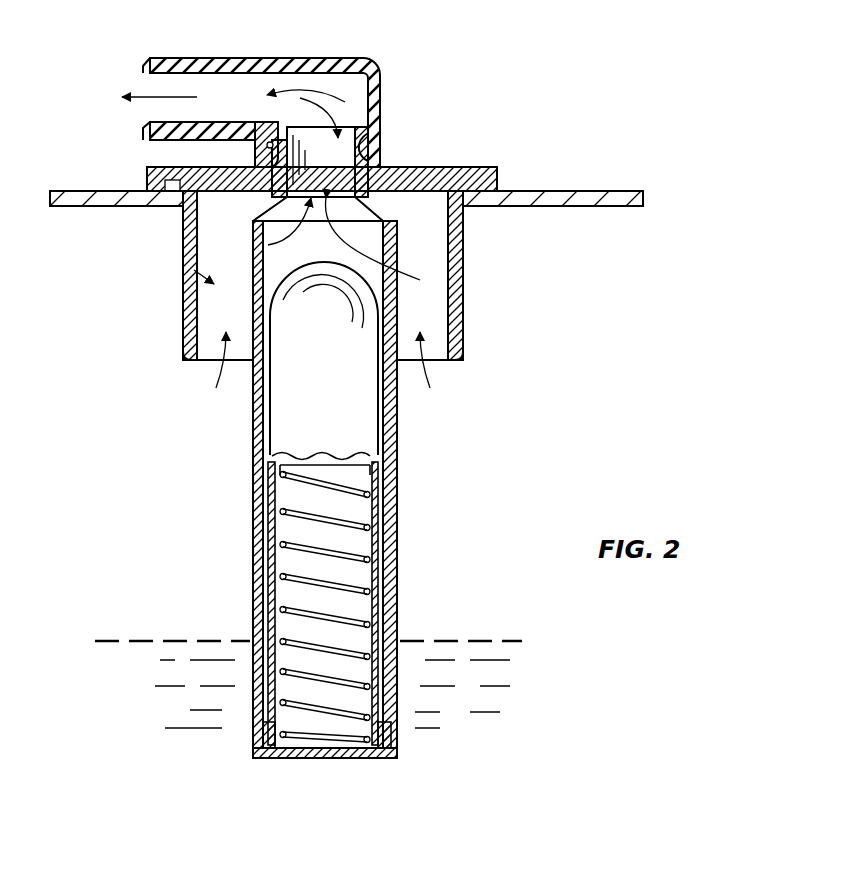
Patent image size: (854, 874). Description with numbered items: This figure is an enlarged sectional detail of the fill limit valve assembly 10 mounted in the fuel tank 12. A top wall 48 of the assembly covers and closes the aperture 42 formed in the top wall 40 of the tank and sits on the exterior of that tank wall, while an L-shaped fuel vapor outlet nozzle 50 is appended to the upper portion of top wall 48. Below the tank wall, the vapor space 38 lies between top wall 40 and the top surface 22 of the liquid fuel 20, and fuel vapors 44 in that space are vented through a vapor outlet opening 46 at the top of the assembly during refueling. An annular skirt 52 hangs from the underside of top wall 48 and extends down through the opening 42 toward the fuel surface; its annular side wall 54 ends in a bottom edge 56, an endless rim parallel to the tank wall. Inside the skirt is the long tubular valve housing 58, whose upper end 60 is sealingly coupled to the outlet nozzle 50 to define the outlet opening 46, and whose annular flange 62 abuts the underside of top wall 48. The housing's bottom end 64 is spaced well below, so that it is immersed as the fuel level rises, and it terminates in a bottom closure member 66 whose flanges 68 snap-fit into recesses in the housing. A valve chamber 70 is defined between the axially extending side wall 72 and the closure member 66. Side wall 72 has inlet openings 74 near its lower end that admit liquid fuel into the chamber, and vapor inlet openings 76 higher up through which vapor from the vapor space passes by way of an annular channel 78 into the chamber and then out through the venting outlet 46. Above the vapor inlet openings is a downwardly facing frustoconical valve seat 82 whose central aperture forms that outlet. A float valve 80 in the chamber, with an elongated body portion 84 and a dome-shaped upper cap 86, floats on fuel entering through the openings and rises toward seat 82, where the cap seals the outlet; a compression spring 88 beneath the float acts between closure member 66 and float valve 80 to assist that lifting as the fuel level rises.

The fill limit valve assembly 10 is at (430, 163).
The fuel tank 12 is at (632, 250).
The liquid fuel 20 is at (490, 664).
The top surface of liquid fuel 22 is at (150, 638).
The vapor space 38 is at (88, 228).
The top wall of fuel tank 40 is at (578, 190).
The aperture (tank opening) 42 is at (463, 226).
The fuel vapors 44 is at (128, 92).
The vapor outlet opening 46 is at (352, 130).
The top wall 48 is at (442, 164).
The L-shaped fuel vapor outlet nozzle 50 is at (311, 56).
The annular skirt 52 is at (181, 303).
The annular side wall 54 is at (456, 337).
The bottom edge 56 is at (198, 362).
The valve housing 58 is at (412, 530).
The upper end of valve housing 60 is at (376, 159).
The annular flange 62 is at (452, 168).
The bottom end of valve housing 64 is at (402, 721).
The bottom closure member 66 is at (361, 757).
The flanges 68 is at (252, 727).
The valve chamber 70 is at (368, 270).
The side wall 72 is at (392, 566).
The inlet openings (church windows) 74 is at (255, 546).
The vapor inlet openings 76 is at (250, 230).
The annular channel 78 is at (184, 265).
The float valve 80 is at (354, 432).
The frustoconical valve seat 82 is at (395, 235).
The body portion 84 is at (288, 437).
The dome-shaped upper cap 86 is at (313, 258).
The compression spring 88 is at (341, 622).